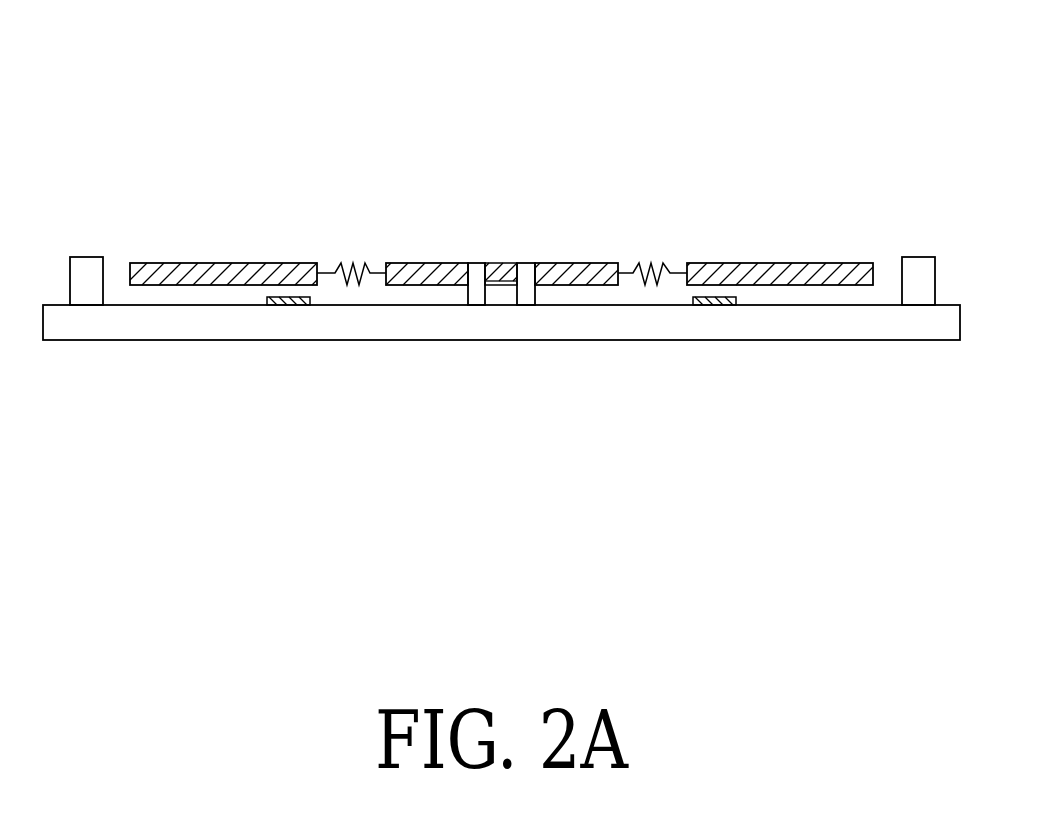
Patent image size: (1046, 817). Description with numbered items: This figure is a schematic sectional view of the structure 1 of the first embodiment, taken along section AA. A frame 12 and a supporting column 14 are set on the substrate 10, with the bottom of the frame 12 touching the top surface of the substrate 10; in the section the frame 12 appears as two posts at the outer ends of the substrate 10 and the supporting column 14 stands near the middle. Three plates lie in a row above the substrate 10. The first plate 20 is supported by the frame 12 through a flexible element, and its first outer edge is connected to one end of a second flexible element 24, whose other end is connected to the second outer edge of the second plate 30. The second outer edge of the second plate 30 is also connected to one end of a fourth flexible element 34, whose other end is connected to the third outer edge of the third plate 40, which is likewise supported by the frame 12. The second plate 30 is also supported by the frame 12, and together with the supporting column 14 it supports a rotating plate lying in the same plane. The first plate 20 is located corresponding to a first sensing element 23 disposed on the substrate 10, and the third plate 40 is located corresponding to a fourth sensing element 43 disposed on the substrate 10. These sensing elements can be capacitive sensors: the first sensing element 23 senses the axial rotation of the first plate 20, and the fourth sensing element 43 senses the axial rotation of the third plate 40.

The MEMS device 1 is at (897, 50).
The substrate 10 is at (123, 340).
The frame 12 is at (85, 257).
The supporting column 14 is at (537, 292).
The first plate 20 is at (168, 263).
The first sensing element 23 is at (268, 298).
The second flexible element 24 is at (337, 263).
The second plate 30 is at (433, 263).
The fourth flexible element 34 is at (633, 263).
The third plate 40 is at (720, 263).
The fourth sensing element 43 is at (693, 297).